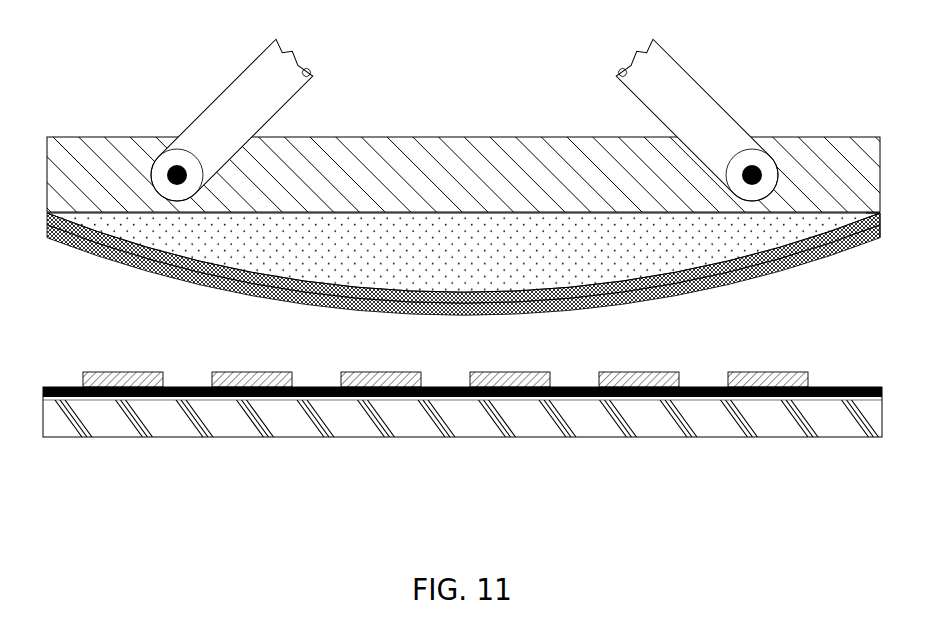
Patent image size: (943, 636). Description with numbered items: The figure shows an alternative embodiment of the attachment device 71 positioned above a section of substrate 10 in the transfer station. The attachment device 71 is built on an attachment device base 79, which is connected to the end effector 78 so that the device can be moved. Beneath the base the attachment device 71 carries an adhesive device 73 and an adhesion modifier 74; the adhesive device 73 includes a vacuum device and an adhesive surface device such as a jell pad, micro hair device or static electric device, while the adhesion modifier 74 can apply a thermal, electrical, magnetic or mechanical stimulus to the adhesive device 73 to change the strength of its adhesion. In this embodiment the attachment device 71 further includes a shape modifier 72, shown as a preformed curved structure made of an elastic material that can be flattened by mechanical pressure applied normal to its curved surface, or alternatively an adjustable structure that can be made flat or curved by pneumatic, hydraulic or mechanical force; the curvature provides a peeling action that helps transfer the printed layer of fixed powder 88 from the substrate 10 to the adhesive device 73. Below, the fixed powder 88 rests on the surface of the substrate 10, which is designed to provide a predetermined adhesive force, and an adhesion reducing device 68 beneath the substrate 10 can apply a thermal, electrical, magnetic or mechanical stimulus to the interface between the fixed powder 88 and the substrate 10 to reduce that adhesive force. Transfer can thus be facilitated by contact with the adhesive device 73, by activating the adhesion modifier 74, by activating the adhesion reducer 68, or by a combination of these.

The substrate 10 is at (842, 388).
The adhesion reducing device 68 is at (648, 427).
The attachment device 71 is at (790, 73).
The shape modifier 72 is at (137, 263).
The adhesive device 73 is at (273, 298).
The adhesion modifier 74 is at (207, 285).
The end effector 78 is at (620, 82).
The attachment device base 79 is at (847, 217).
The fixed powder 88 is at (77, 362).